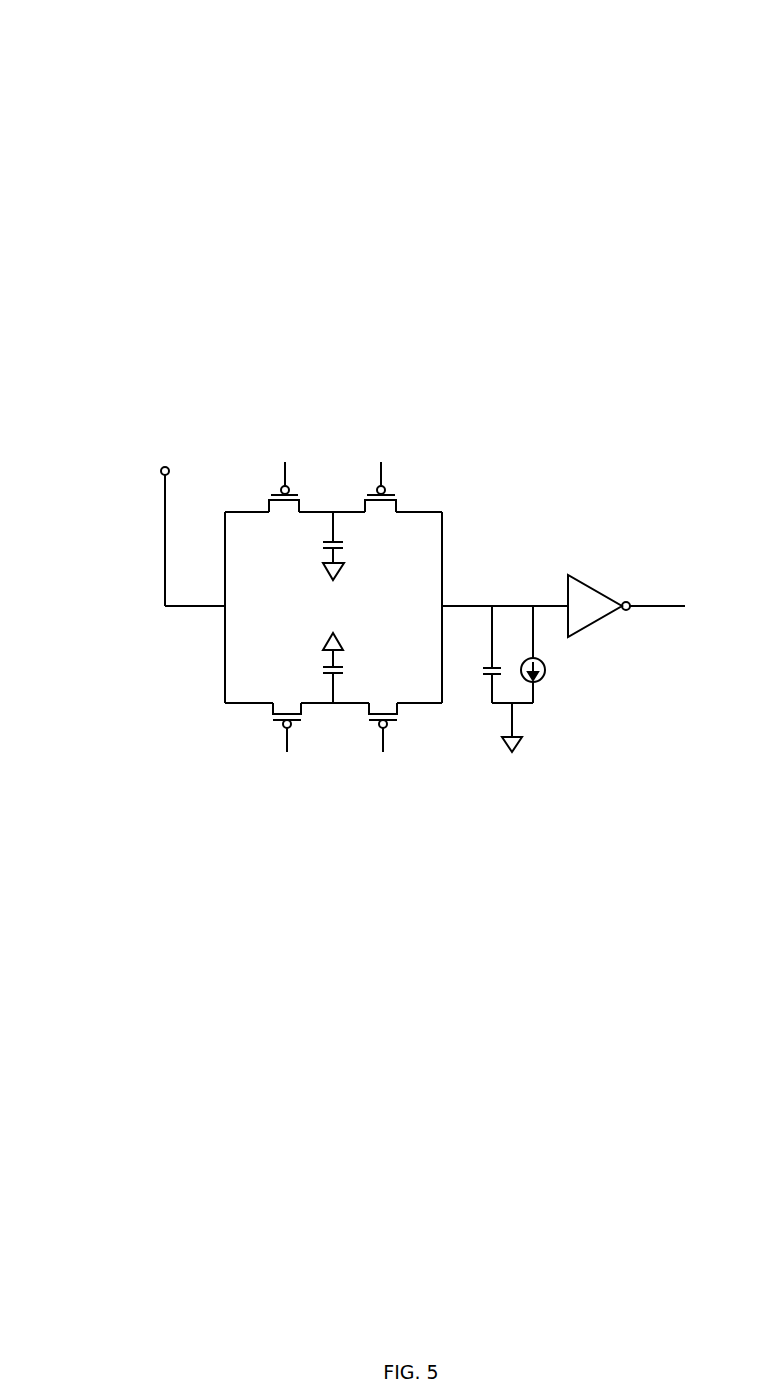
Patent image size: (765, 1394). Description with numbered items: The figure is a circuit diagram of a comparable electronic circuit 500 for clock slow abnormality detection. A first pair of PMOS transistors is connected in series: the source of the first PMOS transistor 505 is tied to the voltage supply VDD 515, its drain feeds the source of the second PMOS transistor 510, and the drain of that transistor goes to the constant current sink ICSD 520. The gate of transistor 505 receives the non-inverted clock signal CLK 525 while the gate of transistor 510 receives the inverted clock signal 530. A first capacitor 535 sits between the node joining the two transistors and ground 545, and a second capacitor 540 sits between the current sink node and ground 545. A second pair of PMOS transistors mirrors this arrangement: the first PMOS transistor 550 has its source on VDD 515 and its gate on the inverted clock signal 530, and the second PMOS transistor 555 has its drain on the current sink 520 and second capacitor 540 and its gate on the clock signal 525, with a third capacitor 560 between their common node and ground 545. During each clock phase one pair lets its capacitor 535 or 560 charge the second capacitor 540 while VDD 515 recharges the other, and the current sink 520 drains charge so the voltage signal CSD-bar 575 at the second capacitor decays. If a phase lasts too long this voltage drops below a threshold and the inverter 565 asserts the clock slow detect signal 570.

The comparable electronic circuit 500 is at (199, 72).
The first PMOS transistor of the first pair 505 is at (270, 528).
The second PMOS transistor of the first pair 510 is at (368, 528).
The voltage supply VDD 515 is at (178, 461).
The constant current sink ICSD 520 is at (550, 678).
The clock signal CLK 525 is at (396, 785).
The inverted clock signal 530 is at (368, 427).
The first capacitor 535 is at (290, 554).
The second capacitor 540 is at (450, 678).
The ground 545 is at (525, 791).
The first PMOS transistor of the second pair 550 is at (270, 700).
The second PMOS transistor of the second pair 555 is at (370, 700).
The third capacitor 560 is at (290, 676).
The inverter 565 is at (577, 613).
The clock slow detect (CSD) signal 570 is at (640, 601).
The voltage signal CSD-bar 575 is at (496, 570).